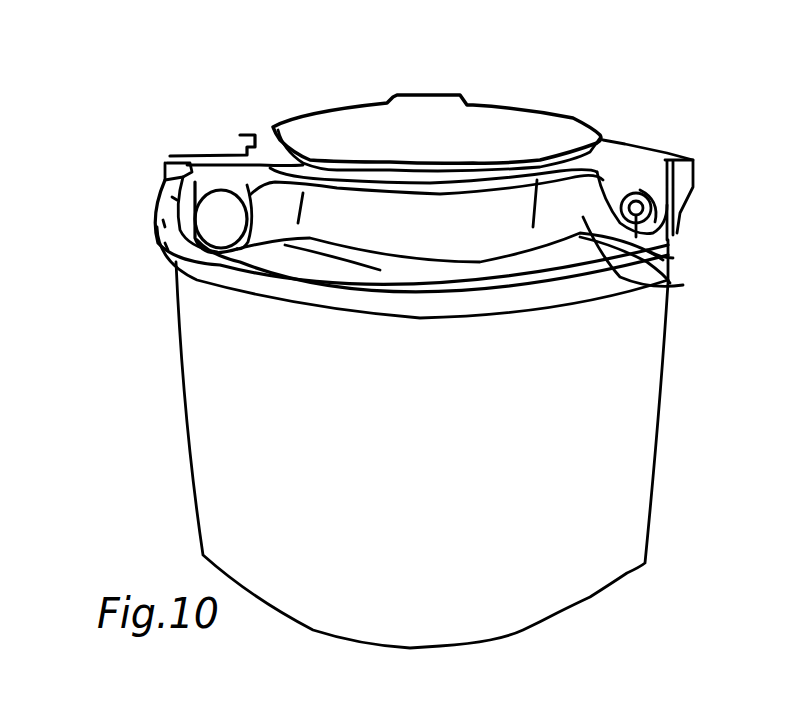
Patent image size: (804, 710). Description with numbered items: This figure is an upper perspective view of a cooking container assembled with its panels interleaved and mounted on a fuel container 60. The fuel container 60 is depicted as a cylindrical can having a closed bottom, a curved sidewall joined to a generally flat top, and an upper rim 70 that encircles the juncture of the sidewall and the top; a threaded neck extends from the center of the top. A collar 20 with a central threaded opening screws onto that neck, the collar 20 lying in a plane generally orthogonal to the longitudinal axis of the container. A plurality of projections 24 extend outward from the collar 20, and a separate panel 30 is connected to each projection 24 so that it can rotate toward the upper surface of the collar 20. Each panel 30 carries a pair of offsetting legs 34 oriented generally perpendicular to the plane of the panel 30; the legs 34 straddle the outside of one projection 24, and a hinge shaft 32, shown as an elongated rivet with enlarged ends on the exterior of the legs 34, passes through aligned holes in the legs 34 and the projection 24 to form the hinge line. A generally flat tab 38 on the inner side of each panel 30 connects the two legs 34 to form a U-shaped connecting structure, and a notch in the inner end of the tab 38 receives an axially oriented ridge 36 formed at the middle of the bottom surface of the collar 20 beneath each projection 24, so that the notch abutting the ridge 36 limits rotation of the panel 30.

The collar 20 is at (437, 223).
The projections 24 is at (160, 200).
The panel 30 is at (567, 77).
The hinge shaft 32 is at (663, 258).
The legs 34 is at (247, 180).
The ridge 36 is at (673, 224).
The tab 38 is at (627, 148).
The fuel container 60 is at (165, 381).
The upper rim 70 is at (197, 267).